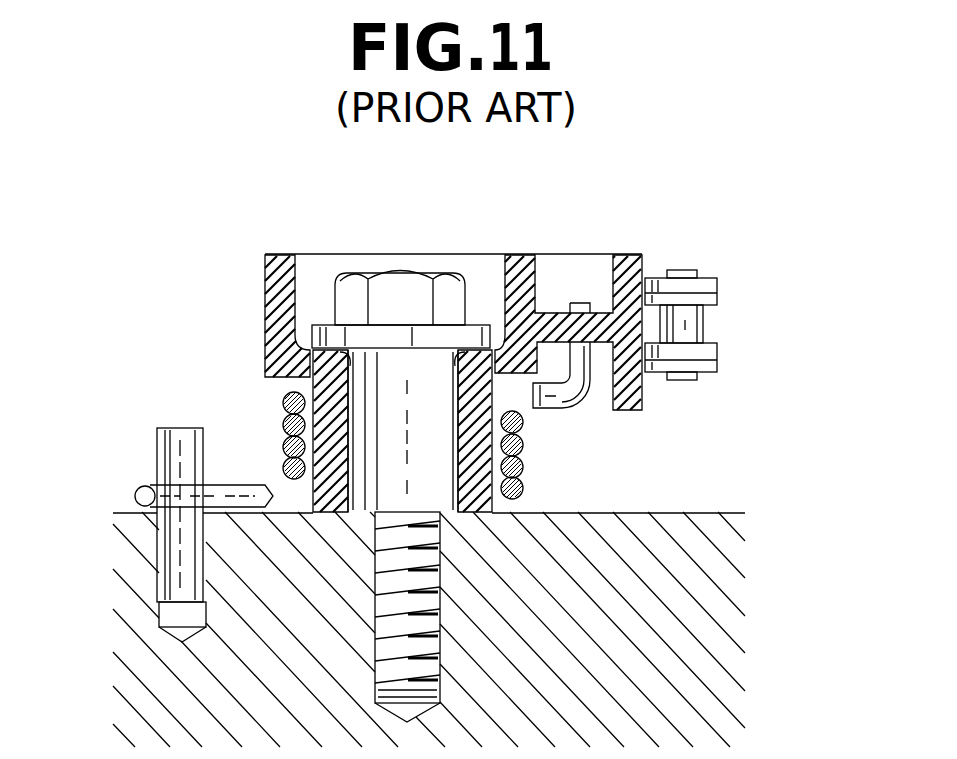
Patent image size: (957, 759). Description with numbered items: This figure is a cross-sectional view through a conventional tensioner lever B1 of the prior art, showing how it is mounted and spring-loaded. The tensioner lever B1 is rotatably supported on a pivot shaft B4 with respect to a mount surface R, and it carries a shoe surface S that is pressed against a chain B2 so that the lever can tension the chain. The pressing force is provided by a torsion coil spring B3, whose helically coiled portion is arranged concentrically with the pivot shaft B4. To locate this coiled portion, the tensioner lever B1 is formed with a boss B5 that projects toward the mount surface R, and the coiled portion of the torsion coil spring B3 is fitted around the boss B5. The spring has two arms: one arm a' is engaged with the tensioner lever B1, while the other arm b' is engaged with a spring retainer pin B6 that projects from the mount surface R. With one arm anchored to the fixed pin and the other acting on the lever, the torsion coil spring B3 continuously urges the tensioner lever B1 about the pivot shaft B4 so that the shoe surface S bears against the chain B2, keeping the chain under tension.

The tensioner lever B1 is at (268, 291).
The chain B2 is at (705, 322).
The torsion coil spring B3 is at (280, 411).
The pivot shaft B4 is at (400, 284).
The boss B5 is at (472, 463).
The spring retainer pin B6 is at (156, 452).
The shoe surface S is at (643, 258).
The mount surface R is at (700, 512).
The one arm of the torsion coil spring a' is at (593, 436).
The other arm of the torsion coil spring b' is at (229, 449).